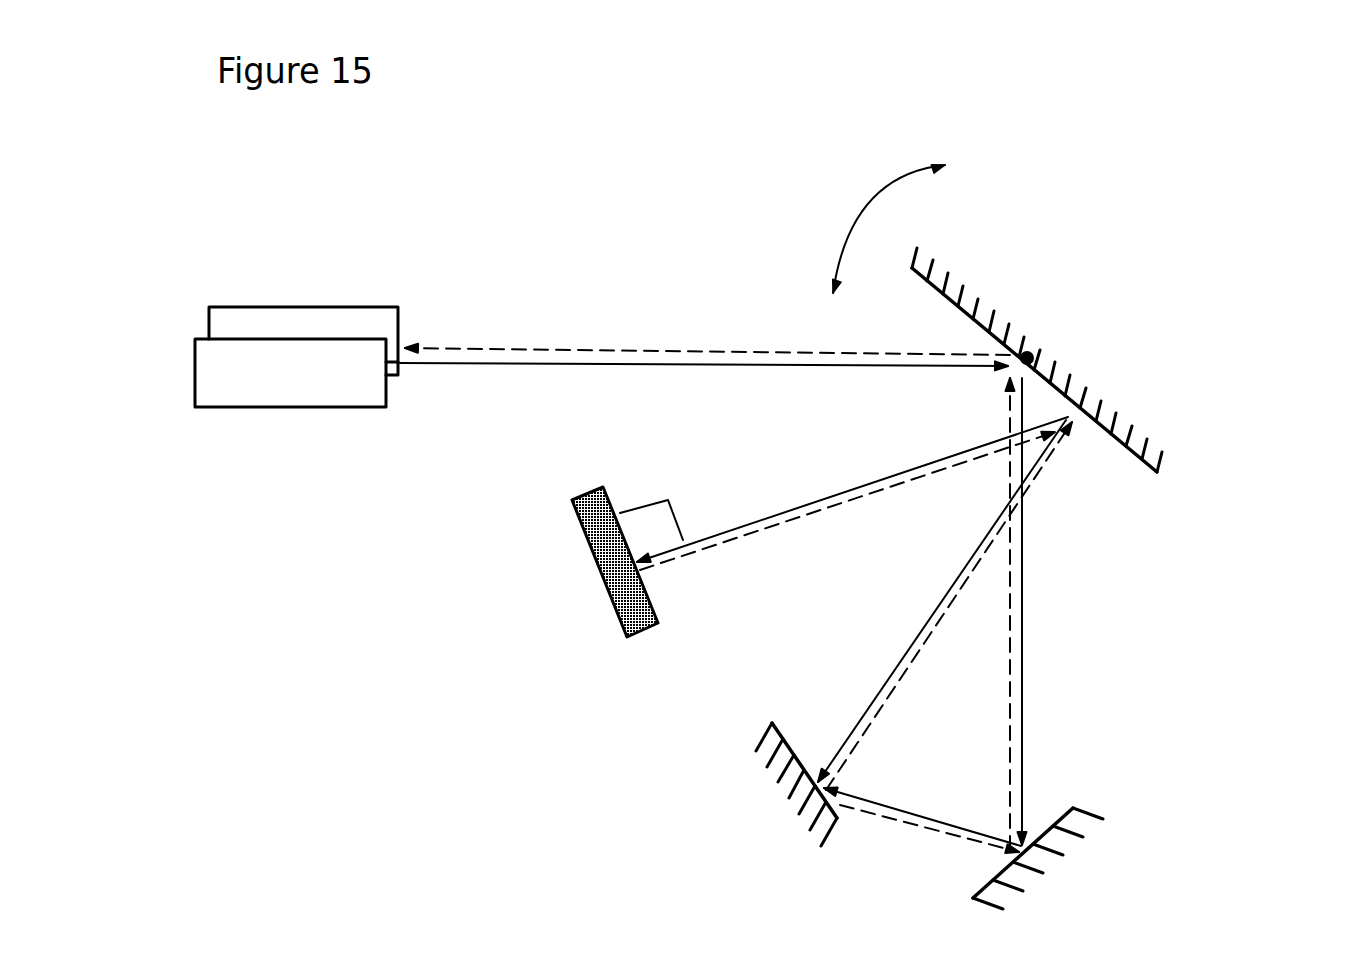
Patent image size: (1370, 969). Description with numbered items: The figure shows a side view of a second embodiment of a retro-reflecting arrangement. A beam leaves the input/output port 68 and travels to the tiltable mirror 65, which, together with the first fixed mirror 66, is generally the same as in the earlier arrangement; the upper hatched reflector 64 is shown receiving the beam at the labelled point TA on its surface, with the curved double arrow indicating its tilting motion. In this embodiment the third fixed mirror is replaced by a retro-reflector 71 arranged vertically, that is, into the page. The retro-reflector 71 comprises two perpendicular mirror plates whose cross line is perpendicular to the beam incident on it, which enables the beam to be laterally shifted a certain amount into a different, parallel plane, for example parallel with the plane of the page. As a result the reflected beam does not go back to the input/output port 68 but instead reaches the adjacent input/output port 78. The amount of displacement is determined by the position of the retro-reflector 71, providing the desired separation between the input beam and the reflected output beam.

The scanning mirror 64 is at (1138, 462).
The tiltable mirror 65 is at (1050, 818).
The first fixed mirror 66 is at (790, 740).
The input/output port 68 is at (213, 398).
The retro-reflector 71 is at (597, 518).
The adjacent input/output port 78 is at (315, 313).
The target point on scanning mirror TA is at (1035, 352).